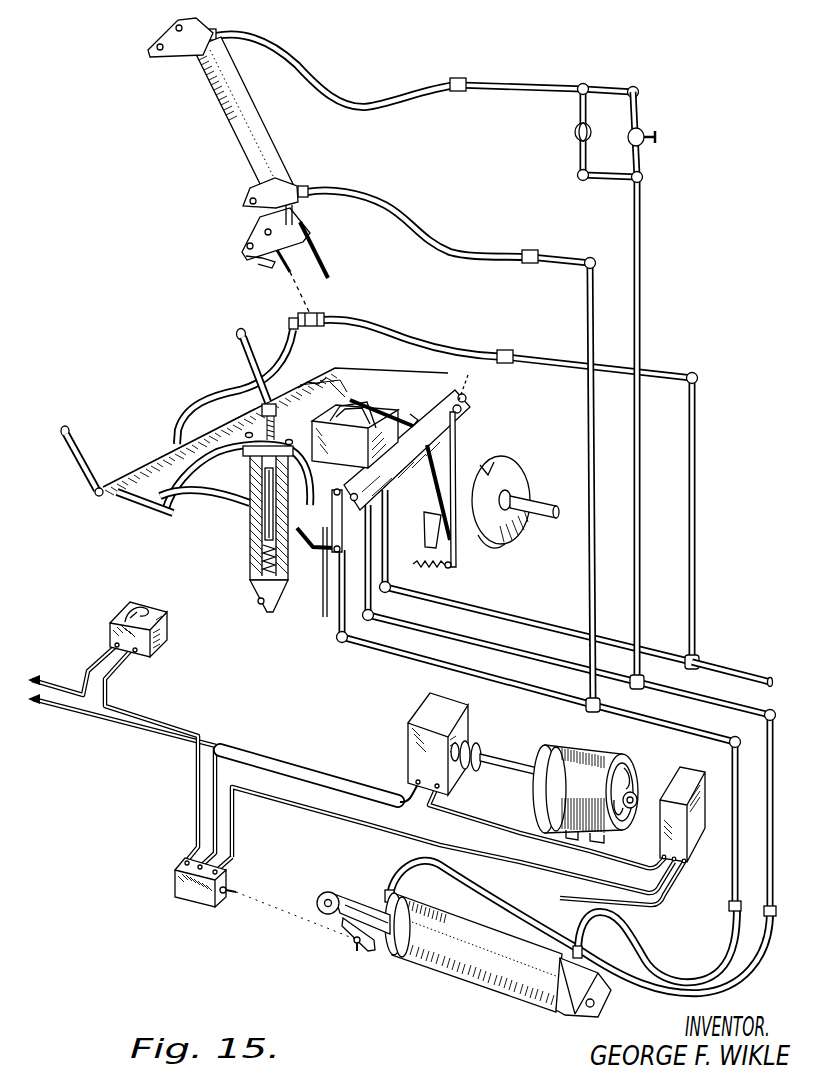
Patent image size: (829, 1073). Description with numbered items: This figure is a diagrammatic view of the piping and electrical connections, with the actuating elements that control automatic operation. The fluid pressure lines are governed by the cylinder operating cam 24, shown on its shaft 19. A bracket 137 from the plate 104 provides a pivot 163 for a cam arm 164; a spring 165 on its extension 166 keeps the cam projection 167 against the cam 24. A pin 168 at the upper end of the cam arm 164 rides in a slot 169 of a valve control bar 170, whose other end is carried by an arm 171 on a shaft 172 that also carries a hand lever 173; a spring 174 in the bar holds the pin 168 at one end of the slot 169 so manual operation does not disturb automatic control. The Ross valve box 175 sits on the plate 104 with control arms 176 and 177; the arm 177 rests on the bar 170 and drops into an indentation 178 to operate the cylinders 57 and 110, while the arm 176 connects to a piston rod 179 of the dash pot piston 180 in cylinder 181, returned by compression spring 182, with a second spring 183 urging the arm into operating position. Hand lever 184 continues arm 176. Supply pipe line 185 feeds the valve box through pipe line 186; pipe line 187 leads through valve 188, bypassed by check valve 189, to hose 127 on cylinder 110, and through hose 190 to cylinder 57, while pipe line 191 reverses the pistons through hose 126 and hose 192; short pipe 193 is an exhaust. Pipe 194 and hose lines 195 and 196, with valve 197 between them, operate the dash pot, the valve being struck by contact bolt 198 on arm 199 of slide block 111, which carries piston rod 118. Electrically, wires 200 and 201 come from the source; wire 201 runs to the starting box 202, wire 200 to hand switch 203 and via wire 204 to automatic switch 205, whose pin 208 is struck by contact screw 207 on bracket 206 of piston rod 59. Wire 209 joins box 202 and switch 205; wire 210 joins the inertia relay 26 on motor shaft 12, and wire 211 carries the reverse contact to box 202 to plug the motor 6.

The motor 6 is at (591, 758).
The motor shaft 12 is at (525, 750).
The shaft 19 is at (533, 502).
The cylinder operating cam 24 is at (520, 477).
The inertia relay 26 is at (412, 748).
The air cylinder 57 is at (470, 965).
The piston rod 59 is at (360, 908).
The plate 104 is at (155, 465).
The cylinder 110 is at (230, 118).
The slide block 111 is at (307, 228).
The piston rod 118 is at (333, 275).
The flexible hose 126 is at (400, 218).
The flexible hose 127 is at (315, 96).
The bracket 137 is at (428, 524).
The pivot 163 is at (478, 543).
The cam arm 164 is at (452, 432).
The spring 165 is at (420, 568).
The extension 166 is at (455, 565).
The cam projection 167 is at (520, 465).
The pin 168 is at (473, 403).
The slot 169 is at (472, 412).
The valve control bar 170 is at (437, 494).
The arm 171 is at (330, 548).
The shaft 172 is at (130, 505).
The hand lever 173 is at (80, 420).
The spring 174 is at (471, 380).
The valve box 175 is at (338, 392).
The valve control arm 176 is at (317, 378).
The valve control arm 177 is at (410, 405).
The indentation 178 is at (362, 443).
The piston rod 179 is at (249, 529).
The piston 180 is at (250, 508).
The cylinder 181 is at (257, 588).
The compression spring 182 is at (257, 552).
The spring 183 is at (258, 437).
The hand lever 184 is at (238, 334).
The pipe line 185 is at (730, 667).
The pipe line 186 is at (565, 614).
The pipe line 187 is at (536, 649).
The valve 188 is at (643, 130).
The check valve 189 is at (573, 127).
The connecting hose 190 is at (547, 916).
The pipe line 191 is at (530, 683).
The connecting hose 192 is at (700, 942).
The short pipe 193 is at (324, 605).
The pipe 194 is at (698, 520).
The flexible hose line 195 is at (383, 334).
The flexible hose line 196 is at (182, 418).
The valve 197 is at (320, 313).
The adjustable contact bolt 198 is at (286, 278).
The arm 199 is at (265, 262).
The wire 200 is at (57, 686).
The wire 201 is at (62, 708).
The motor starting box 202 is at (697, 855).
The hand starting switch 203 is at (162, 645).
The wire 204 is at (157, 722).
The automatic switch 205 is at (175, 880).
The bracket 206 is at (345, 925).
The adjustable contact screw 207 is at (357, 948).
The switch pin 208 is at (226, 902).
The wire 209 is at (293, 808).
The wire 210 is at (283, 748).
The wire 211 is at (507, 817).